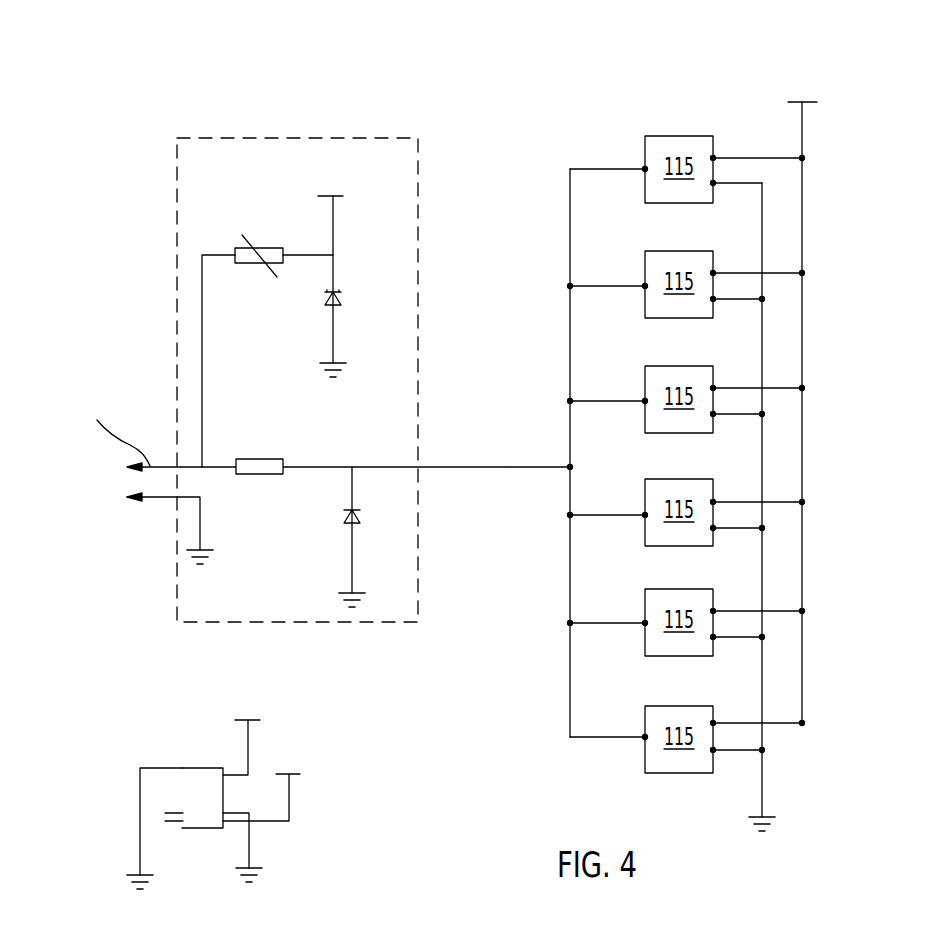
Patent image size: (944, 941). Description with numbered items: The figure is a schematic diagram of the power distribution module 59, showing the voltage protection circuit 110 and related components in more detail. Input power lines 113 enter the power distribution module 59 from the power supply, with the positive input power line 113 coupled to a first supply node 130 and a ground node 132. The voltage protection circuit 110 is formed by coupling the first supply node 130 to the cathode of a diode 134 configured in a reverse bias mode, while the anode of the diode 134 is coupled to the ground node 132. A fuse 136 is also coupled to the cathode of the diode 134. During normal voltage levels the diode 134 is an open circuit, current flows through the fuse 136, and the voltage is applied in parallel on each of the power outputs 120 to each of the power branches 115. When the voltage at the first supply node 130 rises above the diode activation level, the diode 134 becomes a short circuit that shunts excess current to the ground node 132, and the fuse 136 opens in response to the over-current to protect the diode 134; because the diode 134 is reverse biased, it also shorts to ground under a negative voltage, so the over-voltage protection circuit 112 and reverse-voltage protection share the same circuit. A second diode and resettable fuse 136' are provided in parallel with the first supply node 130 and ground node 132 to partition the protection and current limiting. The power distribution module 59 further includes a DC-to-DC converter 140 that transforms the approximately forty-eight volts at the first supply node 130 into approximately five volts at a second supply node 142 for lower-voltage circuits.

The power distribution module 59 is at (506, 79).
The voltage protection circuit 110 is at (282, 137).
The over-voltage protection circuit 112 is at (350, 225).
The input power lines 113 is at (309, 189).
The power branches 115 is at (686, 454).
The power outputs 120 is at (570, 548).
The VS1 node 130 is at (330, 204).
The ground (GND) node 132 is at (205, 553).
The diode 134 is at (347, 302).
The fuse 136 is at (267, 351).
The resettable fuse 136' is at (273, 446).
The DC-to-DC converter 140 is at (118, 788).
The VS2 node 142 is at (290, 800).